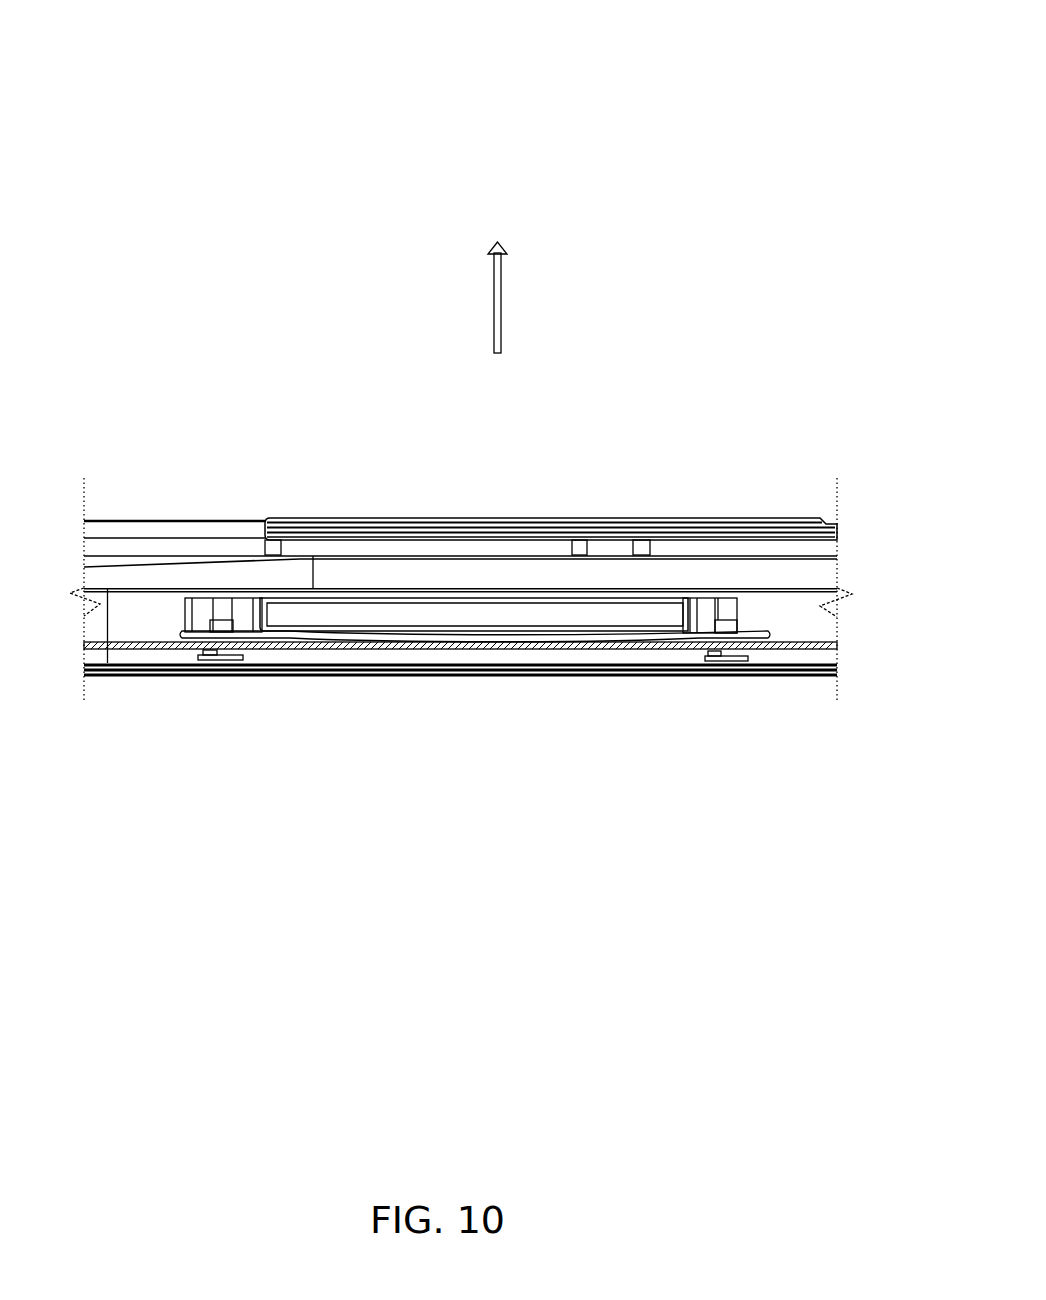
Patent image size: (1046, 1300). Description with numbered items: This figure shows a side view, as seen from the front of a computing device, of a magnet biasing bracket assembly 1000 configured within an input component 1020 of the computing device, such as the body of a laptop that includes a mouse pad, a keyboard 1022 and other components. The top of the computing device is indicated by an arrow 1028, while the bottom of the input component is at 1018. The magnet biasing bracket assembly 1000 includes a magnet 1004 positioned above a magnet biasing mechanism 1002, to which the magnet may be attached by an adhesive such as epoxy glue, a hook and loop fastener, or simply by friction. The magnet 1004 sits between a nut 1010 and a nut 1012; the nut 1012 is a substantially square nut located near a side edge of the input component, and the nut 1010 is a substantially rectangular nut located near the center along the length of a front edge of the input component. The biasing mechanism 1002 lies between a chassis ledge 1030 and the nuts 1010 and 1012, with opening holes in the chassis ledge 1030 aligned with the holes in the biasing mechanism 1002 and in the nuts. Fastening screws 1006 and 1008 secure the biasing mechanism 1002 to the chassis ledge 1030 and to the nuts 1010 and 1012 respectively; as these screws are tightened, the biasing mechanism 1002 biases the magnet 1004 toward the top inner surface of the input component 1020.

The magnet biasing bracket assembly 1000 is at (178, 58).
The magnet biasing mechanism 1002 is at (305, 637).
The magnet 1004 is at (625, 617).
The fastening screw 1006 is at (710, 652).
The fastening screw 1008 is at (223, 653).
The nut 1010 is at (798, 612).
The nut 1012 is at (205, 620).
The bottom of the input component 1018 is at (458, 672).
The input component 1020 is at (197, 522).
The keyboard 1022 is at (545, 518).
The arrow 1028 is at (493, 303).
The chassis ledge 1030 is at (468, 650).